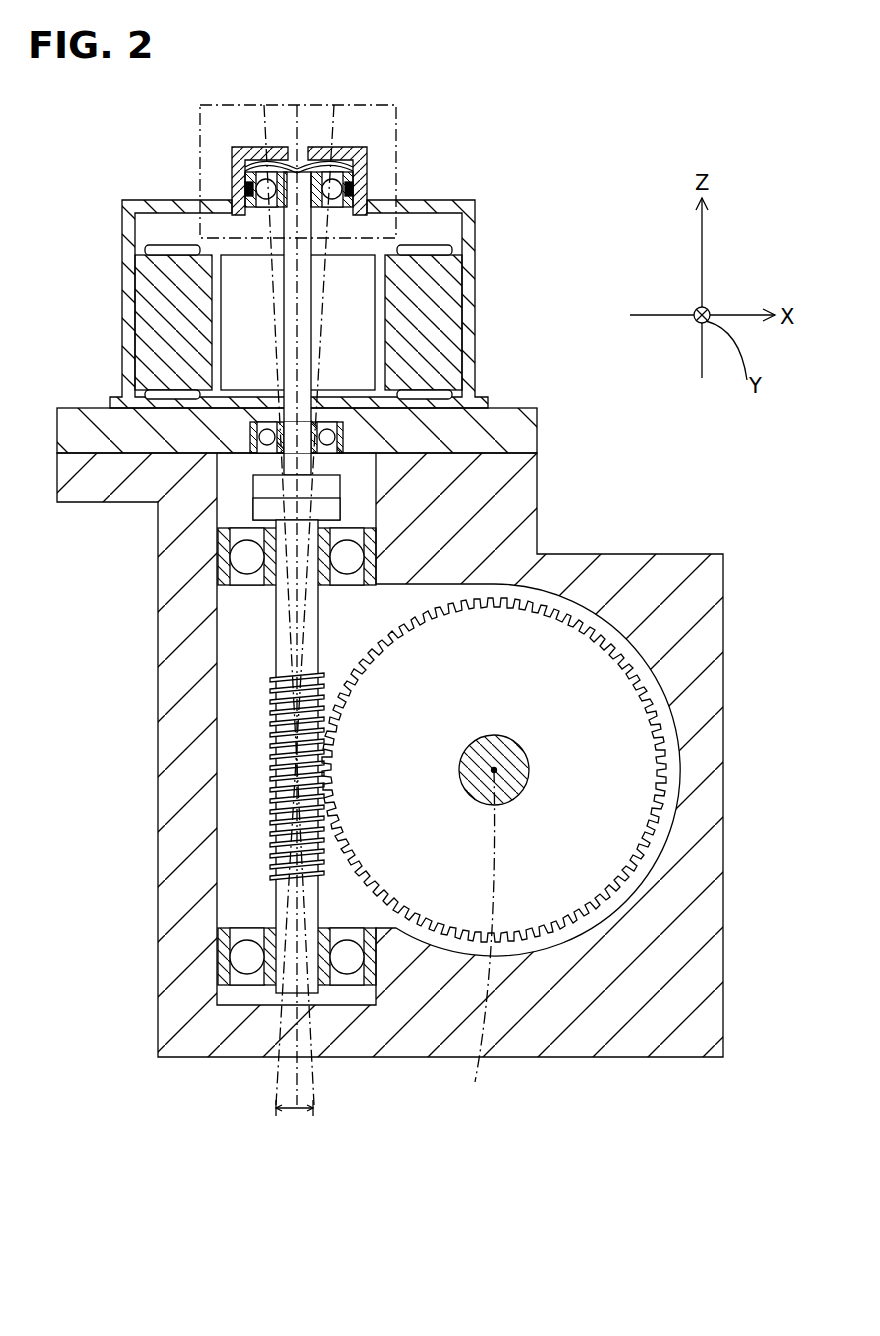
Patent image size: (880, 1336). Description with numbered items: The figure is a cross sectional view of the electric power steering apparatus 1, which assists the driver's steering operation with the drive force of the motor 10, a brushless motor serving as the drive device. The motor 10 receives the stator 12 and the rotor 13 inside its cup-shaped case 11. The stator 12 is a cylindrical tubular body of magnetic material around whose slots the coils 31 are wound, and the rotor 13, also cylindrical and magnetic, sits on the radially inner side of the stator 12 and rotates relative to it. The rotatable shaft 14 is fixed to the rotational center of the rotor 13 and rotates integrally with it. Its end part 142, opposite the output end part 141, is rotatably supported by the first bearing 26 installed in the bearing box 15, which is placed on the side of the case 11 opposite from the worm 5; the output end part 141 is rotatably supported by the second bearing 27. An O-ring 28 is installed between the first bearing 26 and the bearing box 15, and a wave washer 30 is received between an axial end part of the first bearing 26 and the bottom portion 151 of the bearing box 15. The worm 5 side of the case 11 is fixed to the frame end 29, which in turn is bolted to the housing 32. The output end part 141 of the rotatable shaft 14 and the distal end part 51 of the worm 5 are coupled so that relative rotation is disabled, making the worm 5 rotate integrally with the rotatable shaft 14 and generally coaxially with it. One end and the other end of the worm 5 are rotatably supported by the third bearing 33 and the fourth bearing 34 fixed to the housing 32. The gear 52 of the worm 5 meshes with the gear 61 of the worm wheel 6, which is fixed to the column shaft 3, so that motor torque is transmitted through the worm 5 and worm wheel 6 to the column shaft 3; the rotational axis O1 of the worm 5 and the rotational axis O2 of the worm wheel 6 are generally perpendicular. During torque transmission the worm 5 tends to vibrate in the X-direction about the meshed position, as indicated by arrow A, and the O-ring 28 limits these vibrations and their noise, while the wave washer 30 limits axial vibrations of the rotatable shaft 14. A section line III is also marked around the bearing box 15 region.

The electric power steering apparatus 1 is at (150, 1085).
The column shaft 3 is at (515, 742).
The worm 5 is at (274, 630).
The worm wheel 6 is at (546, 856).
The electric motor 10 is at (488, 290).
The case 11 is at (132, 289).
The stator 12 is at (150, 350).
The rotor 13 is at (355, 328).
The rotatable shaft 14 is at (287, 229).
The bearing box 15 is at (246, 198).
The first bearing 26 is at (362, 170).
The second bearing 27 is at (330, 437).
The O-ring 28 is at (352, 188).
The frame end 29 is at (60, 440).
The wave washer 30 is at (330, 165).
The coils 31 is at (430, 250).
The housing 32 is at (180, 855).
The third bearing 33 is at (244, 559).
The fourth bearing 34 is at (238, 958).
The distal end part 51 is at (265, 512).
The gear 52 is at (270, 760).
The gear 61 is at (580, 925).
The output end part 141 is at (262, 488).
The end part 142 is at (248, 186).
The bottom portion 151 is at (276, 165).
The rotational axis O1 is at (300, 1082).
The rotational axis O2 is at (479, 940).
The arrow A is at (287, 1116).
The section line III is at (396, 105).